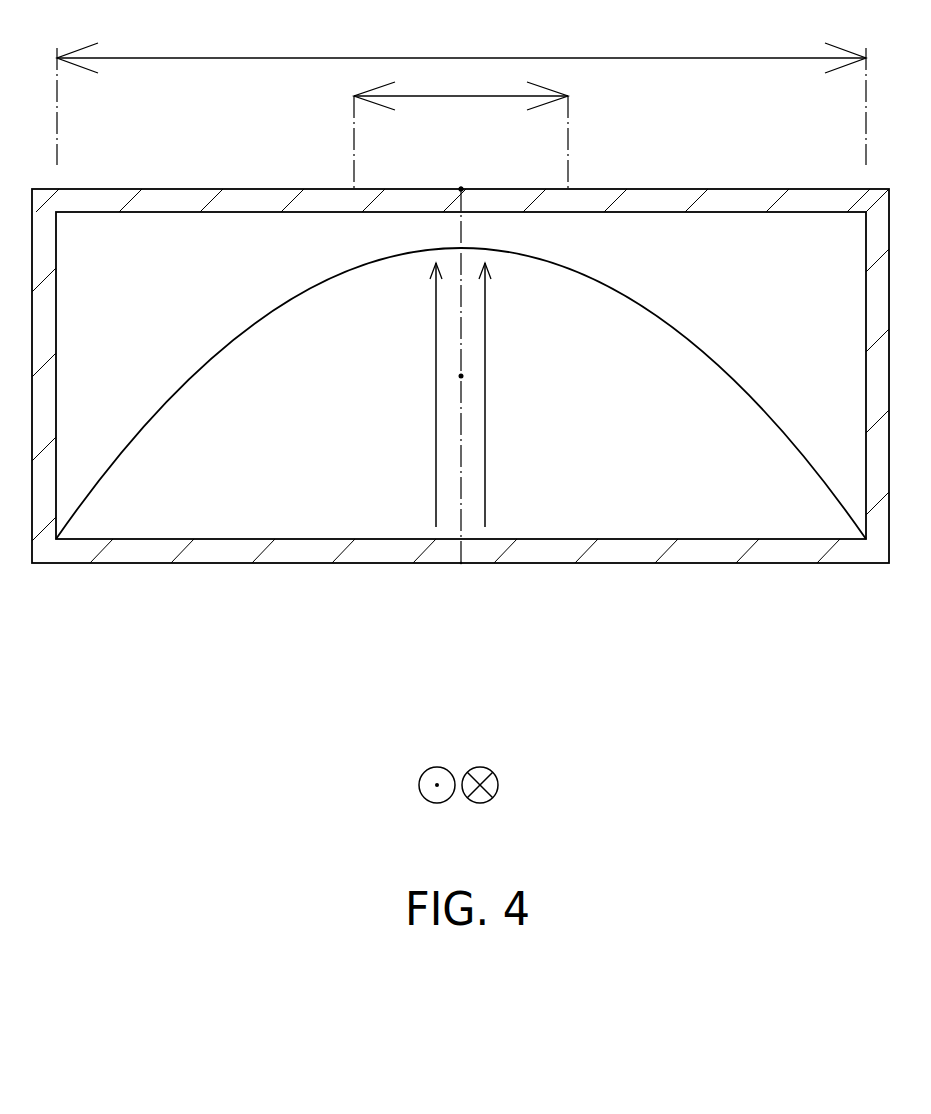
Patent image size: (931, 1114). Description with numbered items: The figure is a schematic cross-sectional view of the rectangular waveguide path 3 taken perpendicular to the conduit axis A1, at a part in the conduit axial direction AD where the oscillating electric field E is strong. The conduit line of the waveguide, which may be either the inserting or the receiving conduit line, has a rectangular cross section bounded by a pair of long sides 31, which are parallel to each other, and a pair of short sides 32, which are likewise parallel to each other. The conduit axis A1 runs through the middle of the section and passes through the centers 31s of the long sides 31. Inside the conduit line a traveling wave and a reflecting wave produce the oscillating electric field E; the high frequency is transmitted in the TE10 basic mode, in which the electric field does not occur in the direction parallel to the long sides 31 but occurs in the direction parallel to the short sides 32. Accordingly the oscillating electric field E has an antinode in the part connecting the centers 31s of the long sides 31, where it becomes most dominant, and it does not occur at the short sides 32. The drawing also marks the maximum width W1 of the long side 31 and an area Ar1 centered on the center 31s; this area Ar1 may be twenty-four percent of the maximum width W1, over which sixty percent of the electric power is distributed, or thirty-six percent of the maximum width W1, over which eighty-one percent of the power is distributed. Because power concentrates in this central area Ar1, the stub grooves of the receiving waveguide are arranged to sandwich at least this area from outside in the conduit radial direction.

The rectangular waveguide path 3 is at (736, 512).
The long sides 31 is at (225, 212).
The centers of the long sides 31s is at (461, 189).
The short sides 32 is at (56, 310).
The maximum width of the long side W1 is at (461, 98).
The area Ar1 is at (461, 129).
The oscillating electric field E is at (436, 328).
The conduit axis A1 is at (461, 376).
The conduit axial direction AD is at (458, 769).